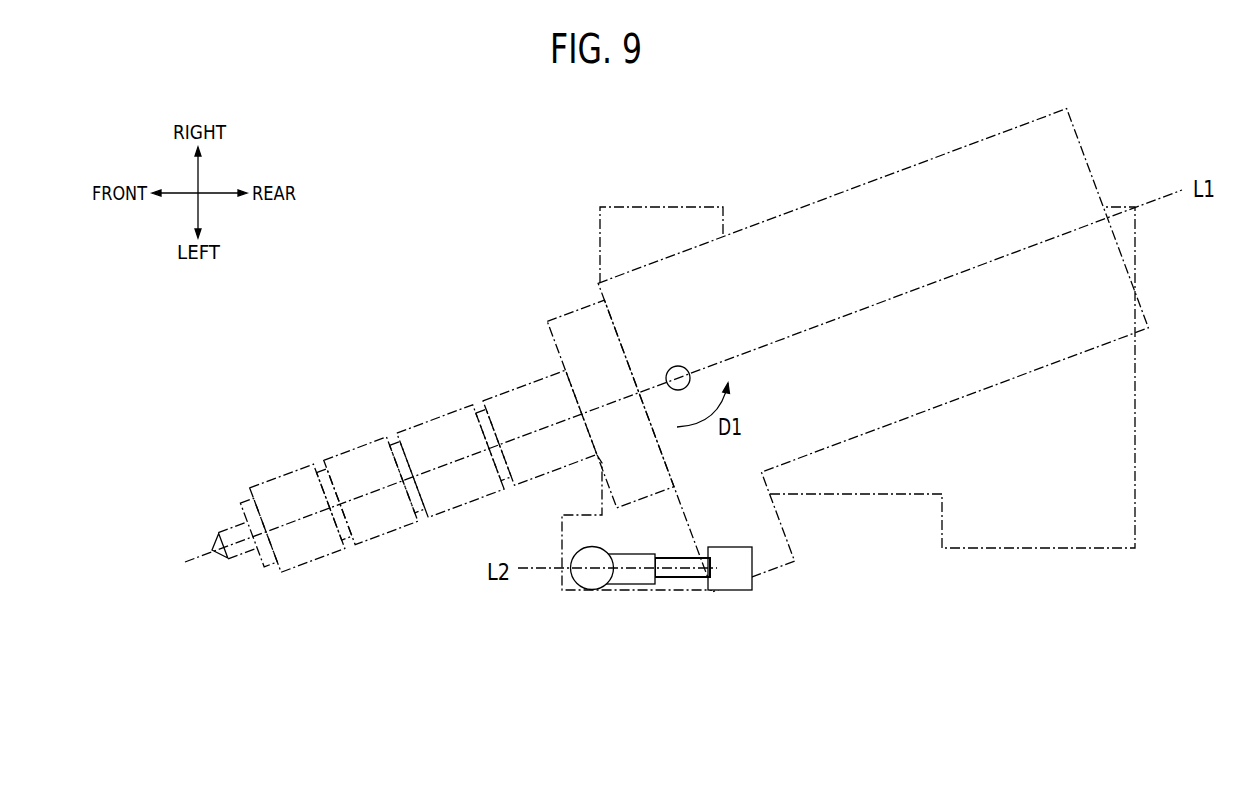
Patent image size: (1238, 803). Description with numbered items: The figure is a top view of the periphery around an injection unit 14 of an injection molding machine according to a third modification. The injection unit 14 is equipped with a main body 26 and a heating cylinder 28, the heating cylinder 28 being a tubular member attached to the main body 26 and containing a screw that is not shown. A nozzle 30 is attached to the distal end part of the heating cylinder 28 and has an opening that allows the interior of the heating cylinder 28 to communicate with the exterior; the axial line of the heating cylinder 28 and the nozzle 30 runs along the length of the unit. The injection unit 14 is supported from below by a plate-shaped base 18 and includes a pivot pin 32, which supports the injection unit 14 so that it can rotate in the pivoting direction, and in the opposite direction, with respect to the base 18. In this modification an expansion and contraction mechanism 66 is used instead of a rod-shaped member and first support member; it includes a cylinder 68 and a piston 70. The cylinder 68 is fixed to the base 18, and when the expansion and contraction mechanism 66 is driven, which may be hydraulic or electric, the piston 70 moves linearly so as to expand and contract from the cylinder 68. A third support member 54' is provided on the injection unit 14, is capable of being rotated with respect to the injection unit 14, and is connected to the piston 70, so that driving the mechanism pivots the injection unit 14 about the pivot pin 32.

The injection unit 14 is at (864, 348).
The main body 26 is at (1066, 151).
The heating cylinder 28 is at (286, 487).
The nozzle 30 is at (231, 533).
The pivot pin 32 is at (672, 365).
The base 18 is at (1045, 532).
The expansion and contraction mechanism 66 is at (601, 605).
The cylinder 68 is at (597, 578).
The piston 70 is at (672, 557).
The third support member 54' is at (730, 596).